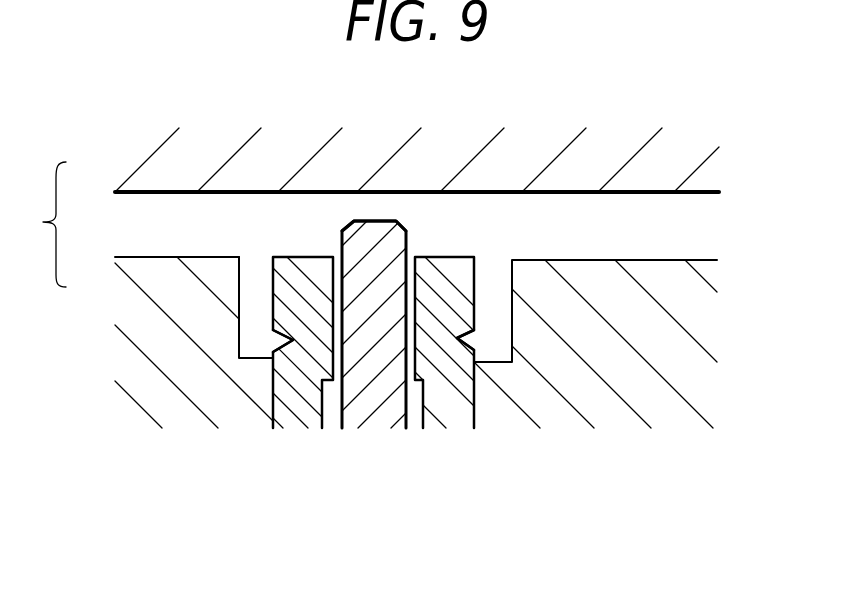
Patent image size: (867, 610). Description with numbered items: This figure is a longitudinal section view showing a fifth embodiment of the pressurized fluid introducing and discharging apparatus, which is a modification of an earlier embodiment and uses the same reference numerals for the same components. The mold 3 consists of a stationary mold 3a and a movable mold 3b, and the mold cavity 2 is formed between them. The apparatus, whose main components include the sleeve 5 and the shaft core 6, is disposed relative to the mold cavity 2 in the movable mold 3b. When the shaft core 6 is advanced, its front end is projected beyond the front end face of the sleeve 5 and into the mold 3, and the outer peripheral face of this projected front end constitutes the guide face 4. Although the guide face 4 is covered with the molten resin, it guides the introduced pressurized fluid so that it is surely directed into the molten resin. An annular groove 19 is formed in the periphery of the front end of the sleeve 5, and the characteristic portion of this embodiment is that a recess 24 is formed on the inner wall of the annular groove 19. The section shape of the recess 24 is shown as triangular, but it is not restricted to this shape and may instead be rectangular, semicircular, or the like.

The mold cavity 2 is at (215, 203).
The mold 3 is at (45, 224).
The stationary mold 3a is at (116, 192).
The movable mold 3b is at (116, 257).
The guide face 4 is at (407, 232).
The sleeve 5 is at (273, 278).
The shaft core 6 is at (383, 221).
The annular groove 19 is at (493, 302).
The recess 24 is at (277, 340).